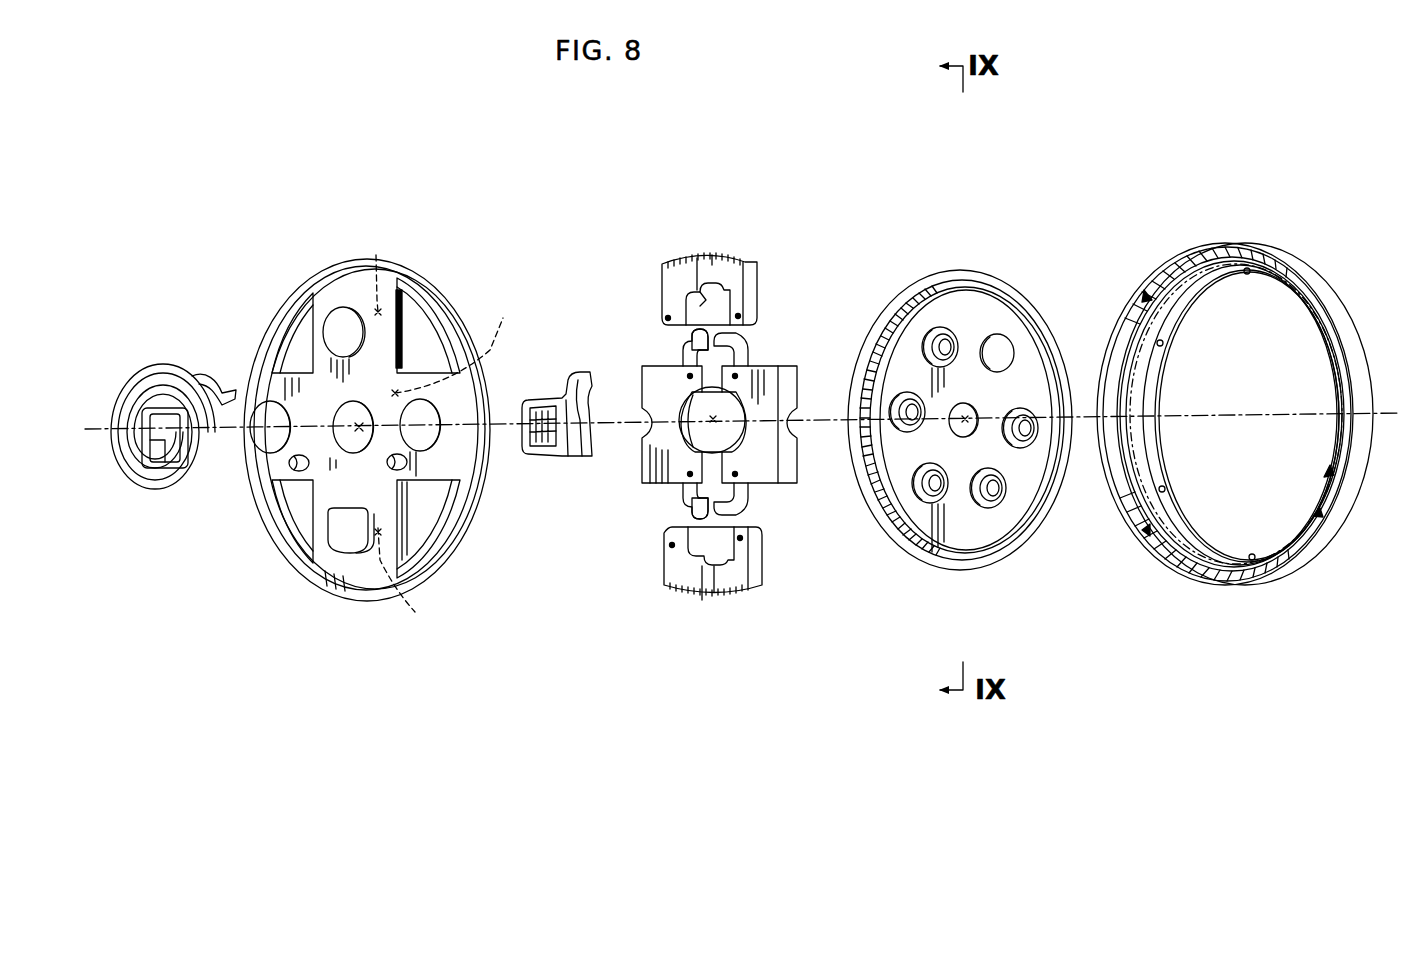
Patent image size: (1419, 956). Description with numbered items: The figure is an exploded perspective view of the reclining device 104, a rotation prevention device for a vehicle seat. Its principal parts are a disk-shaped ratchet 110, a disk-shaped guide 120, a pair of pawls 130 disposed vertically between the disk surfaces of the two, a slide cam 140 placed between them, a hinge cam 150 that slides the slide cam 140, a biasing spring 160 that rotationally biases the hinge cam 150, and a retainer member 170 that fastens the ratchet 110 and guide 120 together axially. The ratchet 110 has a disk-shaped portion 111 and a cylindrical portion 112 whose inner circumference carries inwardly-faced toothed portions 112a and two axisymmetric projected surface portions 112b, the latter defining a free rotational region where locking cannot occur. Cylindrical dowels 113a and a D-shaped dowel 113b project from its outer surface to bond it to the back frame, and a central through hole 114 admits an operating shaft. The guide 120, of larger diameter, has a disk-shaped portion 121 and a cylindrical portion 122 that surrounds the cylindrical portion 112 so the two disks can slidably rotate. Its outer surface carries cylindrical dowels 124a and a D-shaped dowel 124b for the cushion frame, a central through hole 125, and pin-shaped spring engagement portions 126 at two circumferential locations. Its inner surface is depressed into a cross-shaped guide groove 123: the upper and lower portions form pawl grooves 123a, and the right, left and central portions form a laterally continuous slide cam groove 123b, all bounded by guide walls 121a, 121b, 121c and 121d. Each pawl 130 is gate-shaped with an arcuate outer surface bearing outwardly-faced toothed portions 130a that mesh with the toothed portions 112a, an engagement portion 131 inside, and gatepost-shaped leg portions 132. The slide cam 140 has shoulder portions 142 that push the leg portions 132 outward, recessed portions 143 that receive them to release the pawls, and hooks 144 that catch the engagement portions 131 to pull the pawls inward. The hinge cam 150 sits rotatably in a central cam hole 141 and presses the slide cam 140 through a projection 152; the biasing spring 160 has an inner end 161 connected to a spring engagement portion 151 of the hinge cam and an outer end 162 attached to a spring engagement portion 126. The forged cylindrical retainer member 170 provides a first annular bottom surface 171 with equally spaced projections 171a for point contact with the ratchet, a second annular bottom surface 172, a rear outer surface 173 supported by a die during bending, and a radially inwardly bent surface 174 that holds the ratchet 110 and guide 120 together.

The reclining device 104 is at (920, 175).
The ratchet 110 is at (1012, 290).
The disk-shaped portion 111 is at (978, 312).
The cylindrical portion 112 is at (1050, 376).
The inwardly-faced toothed portions 112a is at (953, 290).
The projected surface portions 112b is at (892, 330).
The cylindrical dowels 113a is at (907, 412).
The D-shaped dowel 113b is at (1000, 353).
The through hole 114 is at (970, 420).
The guide 120 is at (394, 266).
The disk-shaped portion 121 is at (419, 350).
The guide wall 121a is at (302, 355).
The guide wall 121b is at (437, 330).
The guide wall 121c is at (301, 505).
The guide wall 121d is at (420, 500).
The cylindrical portion 122 is at (420, 572).
The guide groove 123 is at (447, 417).
The pawl grooves 123a is at (376, 255).
The slide cam groove 123b is at (493, 339).
The cylindrical dowels 124a is at (343, 332).
The D-shaped dowel 124b is at (348, 532).
The through hole 125 is at (360, 426).
The spring engagement portions 126 is at (392, 470).
The pawls 130 is at (719, 425).
The outwardly-faced toothed portions 130a is at (712, 258).
The engagement portions 131 is at (685, 295).
The leg portions 132 is at (740, 316).
The slide cam 140 is at (792, 368).
The cam hole 141 is at (720, 425).
The shoulder portions 142 is at (735, 376).
The recessed portions 143 is at (742, 348).
The hooks 144 is at (700, 335).
The hinge cam 150 is at (540, 425).
The spring engagement portion 151 is at (548, 456).
The projection 152 is at (573, 378).
The biasing spring 160 is at (168, 372).
The inner end 161 is at (152, 465).
The outer end 162 is at (224, 392).
The retainer member 170 is at (1298, 264).
The first annular bottom surface 171 is at (1196, 294).
The projections 171a is at (1248, 275).
The second annular bottom surface 172 is at (1136, 476).
The rear outer surface 173 is at (1192, 342).
The bent surface 174 is at (1316, 515).